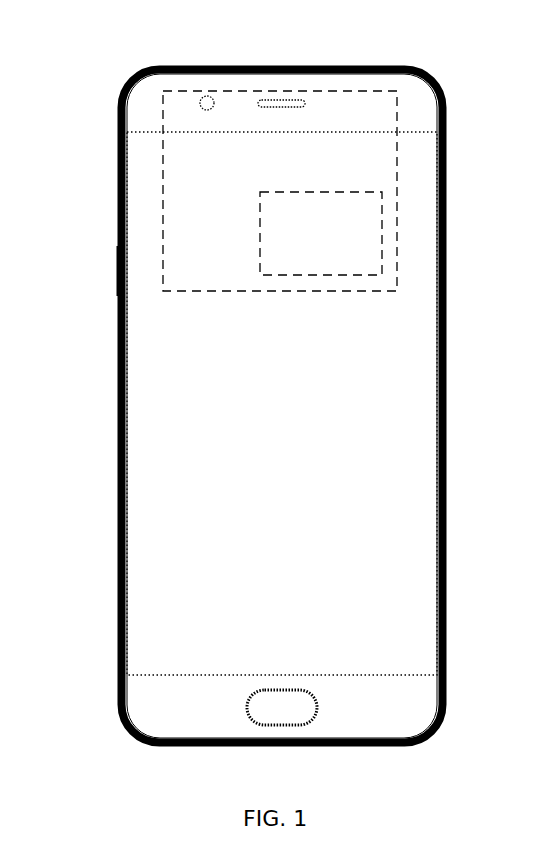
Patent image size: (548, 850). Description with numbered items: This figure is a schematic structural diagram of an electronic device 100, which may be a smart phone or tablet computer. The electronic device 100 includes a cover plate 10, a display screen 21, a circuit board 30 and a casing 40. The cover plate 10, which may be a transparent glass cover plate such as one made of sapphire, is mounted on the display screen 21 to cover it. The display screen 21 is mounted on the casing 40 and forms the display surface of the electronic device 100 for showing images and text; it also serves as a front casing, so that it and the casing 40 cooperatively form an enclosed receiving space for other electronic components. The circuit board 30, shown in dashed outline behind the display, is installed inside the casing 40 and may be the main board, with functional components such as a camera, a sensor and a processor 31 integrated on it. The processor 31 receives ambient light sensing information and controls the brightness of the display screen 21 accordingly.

The electronic device 100 is at (275, 388).
The cover plate 10 is at (145, 92).
The display screen 21 is at (410, 400).
The circuit board 30 is at (397, 185).
The processor 31 is at (382, 250).
The casing 40 is at (445, 598).